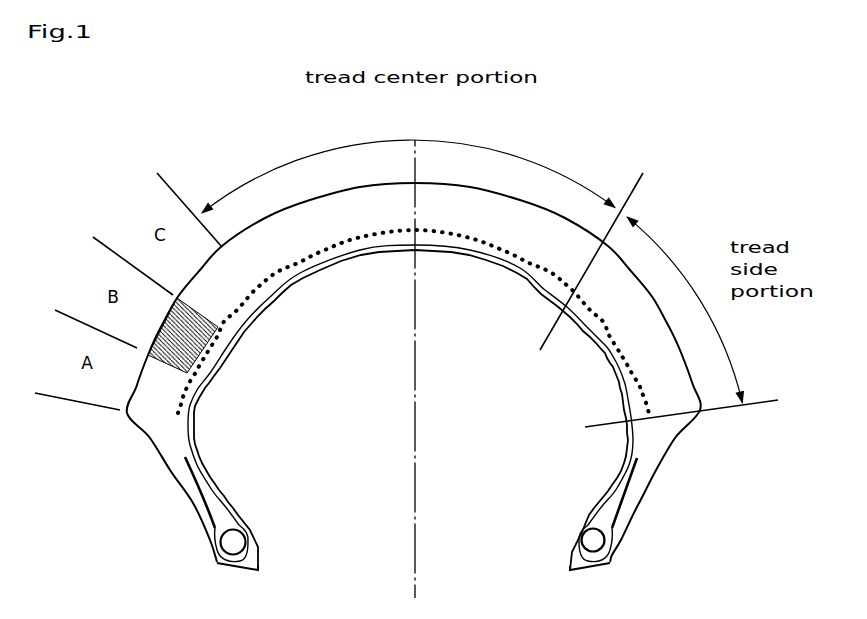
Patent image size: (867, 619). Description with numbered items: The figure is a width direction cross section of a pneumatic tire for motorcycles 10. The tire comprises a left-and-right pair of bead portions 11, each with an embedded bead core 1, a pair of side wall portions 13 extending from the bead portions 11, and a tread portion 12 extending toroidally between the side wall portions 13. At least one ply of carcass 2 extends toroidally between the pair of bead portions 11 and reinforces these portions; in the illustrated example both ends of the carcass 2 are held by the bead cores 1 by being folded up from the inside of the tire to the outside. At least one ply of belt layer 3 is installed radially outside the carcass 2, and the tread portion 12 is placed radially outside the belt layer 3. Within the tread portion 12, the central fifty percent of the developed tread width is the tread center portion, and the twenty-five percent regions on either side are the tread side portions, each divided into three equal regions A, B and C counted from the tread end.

The pneumatic tire for motorcycles 10 is at (219, 148).
The tread portion 12 is at (473, 207).
The bead portion 11 is at (627, 515).
The side wall portion 13 is at (682, 426).
The carcass 2 is at (632, 447).
The belt layer 3 is at (588, 303).
The bead core 1 is at (590, 542).